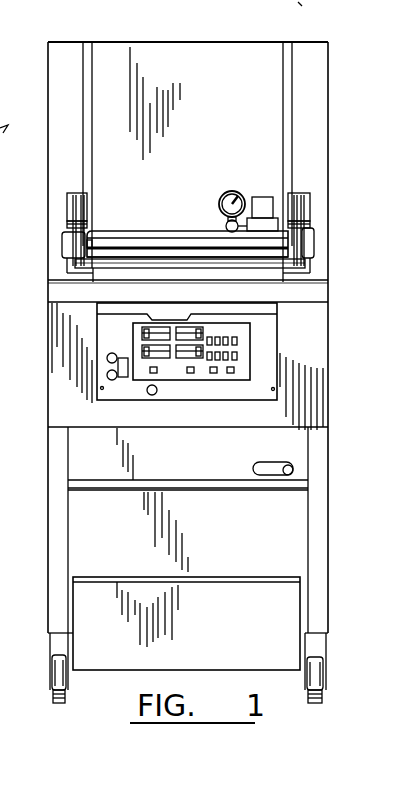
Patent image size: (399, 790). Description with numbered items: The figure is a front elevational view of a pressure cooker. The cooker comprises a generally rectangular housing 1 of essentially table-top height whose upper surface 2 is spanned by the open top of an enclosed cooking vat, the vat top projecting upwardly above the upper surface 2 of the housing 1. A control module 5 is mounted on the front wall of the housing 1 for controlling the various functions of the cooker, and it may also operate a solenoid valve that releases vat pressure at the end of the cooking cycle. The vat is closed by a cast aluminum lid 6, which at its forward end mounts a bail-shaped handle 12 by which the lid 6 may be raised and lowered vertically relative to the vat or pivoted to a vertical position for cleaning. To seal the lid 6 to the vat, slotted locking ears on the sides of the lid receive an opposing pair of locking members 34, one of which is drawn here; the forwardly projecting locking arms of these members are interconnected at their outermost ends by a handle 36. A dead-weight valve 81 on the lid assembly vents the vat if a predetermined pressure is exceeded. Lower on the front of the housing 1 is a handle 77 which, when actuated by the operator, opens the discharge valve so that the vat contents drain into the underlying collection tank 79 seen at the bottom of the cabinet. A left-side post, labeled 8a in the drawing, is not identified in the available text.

The housing 1 is at (329, 380).
The upper surface 2 is at (317, 280).
The control module 5 is at (263, 338).
The lid 6 is at (127, 231).
The bail-shaped handle 12 is at (192, 243).
The locking member 34 is at (313, 205).
The handle 36 is at (262, 264).
The handle 77 is at (270, 465).
The collection tank 79 is at (265, 665).
The dead-weight valve 81 is at (268, 200).
The left cylinder post 8a is at (62, 213).